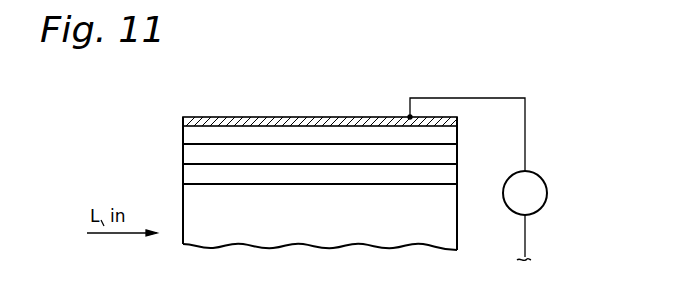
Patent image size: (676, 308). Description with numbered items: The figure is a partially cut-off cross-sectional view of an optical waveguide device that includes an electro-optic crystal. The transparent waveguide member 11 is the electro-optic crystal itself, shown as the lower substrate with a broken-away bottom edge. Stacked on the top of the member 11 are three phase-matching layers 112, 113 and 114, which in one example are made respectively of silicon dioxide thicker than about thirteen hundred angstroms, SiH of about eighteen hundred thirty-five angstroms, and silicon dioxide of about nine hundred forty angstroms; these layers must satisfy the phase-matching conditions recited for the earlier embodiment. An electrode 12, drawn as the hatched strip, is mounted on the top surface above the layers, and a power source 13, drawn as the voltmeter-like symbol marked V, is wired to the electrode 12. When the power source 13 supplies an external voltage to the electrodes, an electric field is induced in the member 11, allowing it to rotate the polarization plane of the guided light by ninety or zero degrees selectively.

The transparent waveguide member 11 is at (189, 246).
The electrode 12 is at (187, 117).
The power source 13 is at (547, 193).
The phase-matching layer 112 is at (183, 183).
The phase-matching layer 113 is at (183, 155).
The phase-matching layer 114 is at (183, 134).